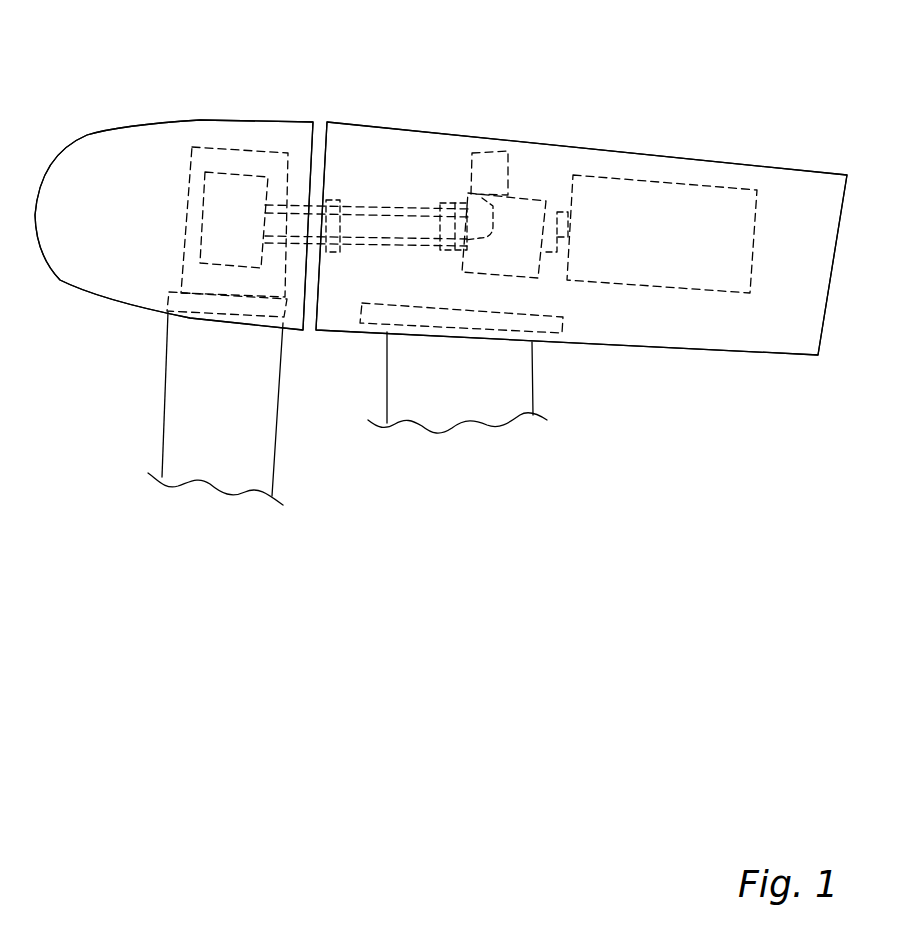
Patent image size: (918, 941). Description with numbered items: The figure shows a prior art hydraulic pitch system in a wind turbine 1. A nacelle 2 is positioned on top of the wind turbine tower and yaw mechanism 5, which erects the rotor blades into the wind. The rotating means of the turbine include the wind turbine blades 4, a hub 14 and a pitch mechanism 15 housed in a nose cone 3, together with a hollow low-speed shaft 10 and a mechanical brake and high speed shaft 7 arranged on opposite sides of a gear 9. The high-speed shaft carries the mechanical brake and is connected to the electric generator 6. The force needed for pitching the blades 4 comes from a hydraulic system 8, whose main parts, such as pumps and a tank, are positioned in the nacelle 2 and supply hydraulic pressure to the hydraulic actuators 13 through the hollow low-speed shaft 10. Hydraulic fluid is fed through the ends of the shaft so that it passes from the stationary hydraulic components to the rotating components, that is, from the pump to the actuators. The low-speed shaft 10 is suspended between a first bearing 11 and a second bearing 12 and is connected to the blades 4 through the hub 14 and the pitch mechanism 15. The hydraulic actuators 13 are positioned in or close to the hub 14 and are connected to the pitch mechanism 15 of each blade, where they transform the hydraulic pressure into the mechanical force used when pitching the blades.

The wind turbine 1 is at (666, 422).
The nacelle 2 is at (833, 156).
The nose cone 3 is at (86, 124).
The wind turbine blades 4 is at (173, 457).
The wind turbine tower and yaw mechanism 5 is at (423, 410).
The generator 6 is at (740, 200).
The mechanical brake and high speed shaft 7 is at (548, 202).
The hydraulic system including hydraulic pump and tank 8 is at (505, 157).
The gear 9 is at (537, 286).
The hollow low-speed shaft 10 is at (388, 206).
The first bearing for low-speed shaft 11 is at (443, 205).
The second bearing for low-speed shaft 12 is at (340, 205).
The hydraulic actuators 13 is at (250, 175).
The hub 14 is at (200, 147).
The pitch mechanism 15 is at (168, 292).